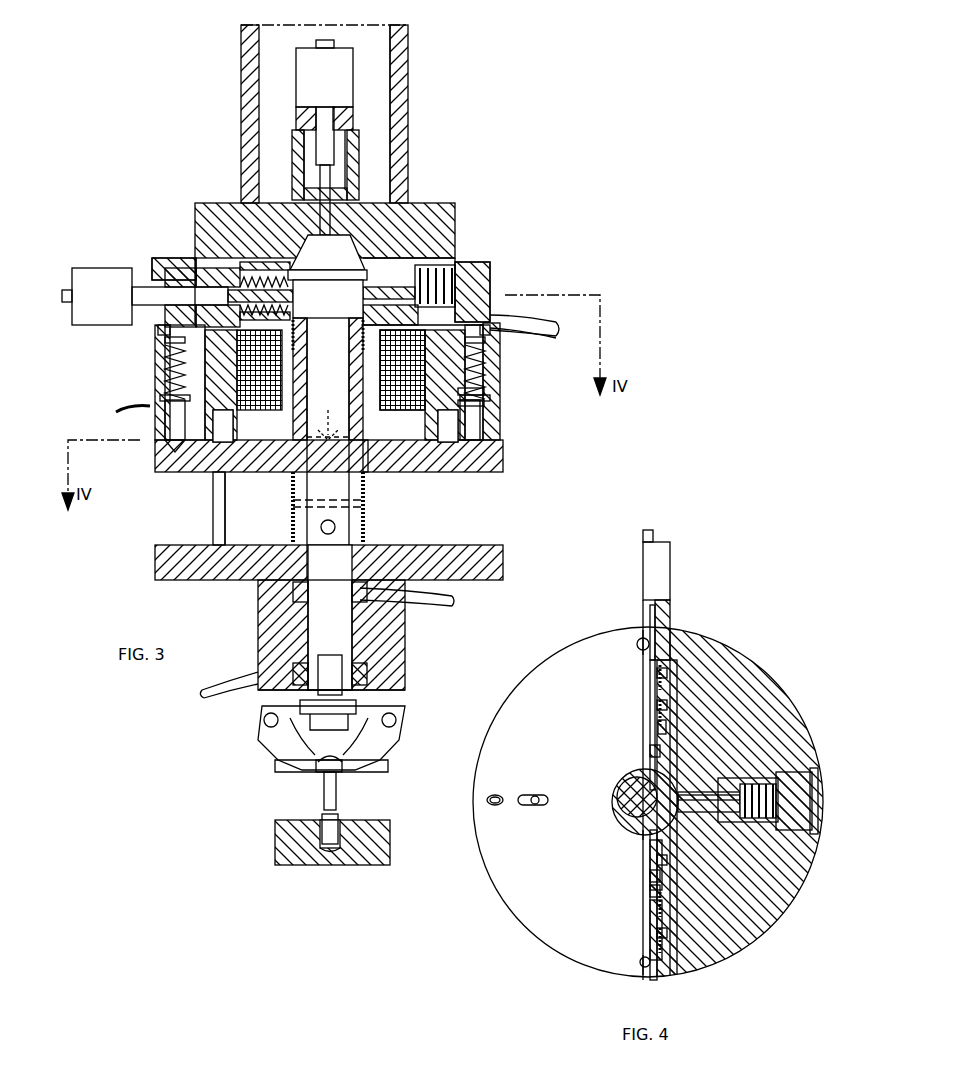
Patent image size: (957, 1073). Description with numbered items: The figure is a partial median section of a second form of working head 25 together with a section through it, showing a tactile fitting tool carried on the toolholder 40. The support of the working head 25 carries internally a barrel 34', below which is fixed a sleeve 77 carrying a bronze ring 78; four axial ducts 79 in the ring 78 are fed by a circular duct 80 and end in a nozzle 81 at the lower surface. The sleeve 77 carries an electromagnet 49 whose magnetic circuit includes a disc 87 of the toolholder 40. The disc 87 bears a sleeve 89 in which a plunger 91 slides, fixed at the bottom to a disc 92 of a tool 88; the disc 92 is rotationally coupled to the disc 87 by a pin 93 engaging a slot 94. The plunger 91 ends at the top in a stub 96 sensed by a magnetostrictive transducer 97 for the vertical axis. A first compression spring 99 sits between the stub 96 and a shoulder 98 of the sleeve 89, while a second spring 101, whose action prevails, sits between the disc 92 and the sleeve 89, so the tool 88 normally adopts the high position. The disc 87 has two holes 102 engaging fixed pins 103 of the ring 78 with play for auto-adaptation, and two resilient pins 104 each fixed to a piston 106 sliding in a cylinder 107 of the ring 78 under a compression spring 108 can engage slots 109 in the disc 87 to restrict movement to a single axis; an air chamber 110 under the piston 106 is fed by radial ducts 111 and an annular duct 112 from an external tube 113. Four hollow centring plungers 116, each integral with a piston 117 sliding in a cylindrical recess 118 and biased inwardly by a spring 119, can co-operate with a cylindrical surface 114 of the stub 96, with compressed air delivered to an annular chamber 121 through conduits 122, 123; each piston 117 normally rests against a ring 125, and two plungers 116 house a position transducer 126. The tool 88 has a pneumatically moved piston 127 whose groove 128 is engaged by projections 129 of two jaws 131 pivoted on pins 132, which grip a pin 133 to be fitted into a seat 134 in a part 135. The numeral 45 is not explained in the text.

In FIG. 3, the working head 25 is at (240, 155).
In FIG. 3, the barrel 34' is at (417, 114).
In FIG. 3, the magnetostrictive transducer 97 is at (353, 102).
In FIG. 3, the sleeve 77 is at (448, 228).
In FIG. 4, the sleeve 77 is at (738, 662).
In FIG. 3, the piston 117 is at (245, 268).
In FIG. 4, the piston 117 is at (657, 706).
In FIG. 3, the annular chamber 121 is at (258, 262).
In FIG. 4, the annular chamber 121 is at (658, 727).
In FIG. 3, the ring 125 is at (275, 262).
In FIG. 4, the ring 125 is at (650, 892).
In FIG. 3, the cylindrical recess 118 is at (262, 300).
In FIG. 4, the cylindrical recess 118 is at (778, 908).
In FIG. 3, the spring 119 is at (456, 262).
In FIG. 4, the spring 119 is at (657, 673).
In FIG. 3, the position transducer 126 is at (154, 268).
In FIG. 4, the position transducer 126 is at (660, 572).
In FIG. 3, the cylindrical surface 114 is at (327, 252).
In FIG. 4, the cylindrical surface 114 is at (645, 782).
In FIG. 3, the stub 96 is at (336, 262).
In FIG. 3, the hollow centring plunger 116 is at (296, 304).
In FIG. 4, the hollow centring plunger 116 is at (650, 750).
In FIG. 3, the conduit 122 is at (548, 322).
In FIG. 3, the circular duct 80 is at (500, 335).
In FIG. 3, the cylinder 107 is at (165, 348).
In FIG. 3, the conduit 123 is at (75, 343).
In FIG. 3, the bronze ring 78 is at (158, 365).
In FIG. 3, the piston 106 is at (165, 380).
In FIG. 3, the external tube 113 is at (116, 412).
In FIG. 3, the valve assembly 45 is at (145, 436).
In FIG. 3, the resilient pin 104 is at (170, 445).
In FIG. 4, the resilient pin 104 is at (498, 794).
In FIG. 3, the slot 109 is at (165, 460).
In FIG. 4, the slot 109 is at (494, 806).
In FIG. 3, the nozzle 81 is at (200, 445).
In FIG. 3, the pin 93 is at (213, 535).
In FIG. 4, the pin 93 is at (540, 792).
In FIG. 3, the slot 94 is at (225, 475).
In FIG. 4, the slot 94 is at (540, 806).
In FIG. 3, the annular duct 112 is at (234, 440).
In FIG. 3, the second spring 101 is at (293, 505).
In FIG. 3, the first compression spring 99 is at (352, 338).
In FIG. 3, the shoulder 98 is at (328, 449).
In FIG. 3, the sleeve 89 is at (331, 370).
In FIG. 4, the sleeve 89 is at (615, 818).
In FIG. 3, the fixed pin 103 is at (327, 421).
In FIG. 4, the fixed pin 103 is at (640, 628).
In FIG. 3, the hole 102 is at (328, 491).
In FIG. 4, the hole 102 is at (640, 640).
In FIG. 3, the plunger 91 is at (336, 527).
In FIG. 4, the plunger 91 is at (640, 835).
In FIG. 3, the electromagnet 49 is at (400, 440).
In FIG. 3, the disc 87 is at (425, 472).
In FIG. 3, the disc 92 is at (400, 560).
In FIG. 3, the compression spring 108 is at (488, 378).
In FIG. 3, the air chamber 110 is at (488, 392).
In FIG. 3, the radial duct 111 is at (490, 408).
In FIG. 3, the axial duct 79 is at (490, 425).
In FIG. 3, the toolholder 40 is at (167, 515).
In FIG. 3, the piston 127 is at (342, 622).
In FIG. 3, the tool 88 is at (405, 673).
In FIG. 3, the projection 129 is at (328, 660).
In FIG. 3, the pin 132 is at (262, 725).
In FIG. 3, the groove 128 is at (332, 730).
In FIG. 3, the jaw 131 is at (280, 755).
In FIG. 3, the pin 133 is at (336, 793).
In FIG. 3, the seat 134 is at (348, 830).
In FIG. 3, the part 135 is at (292, 836).